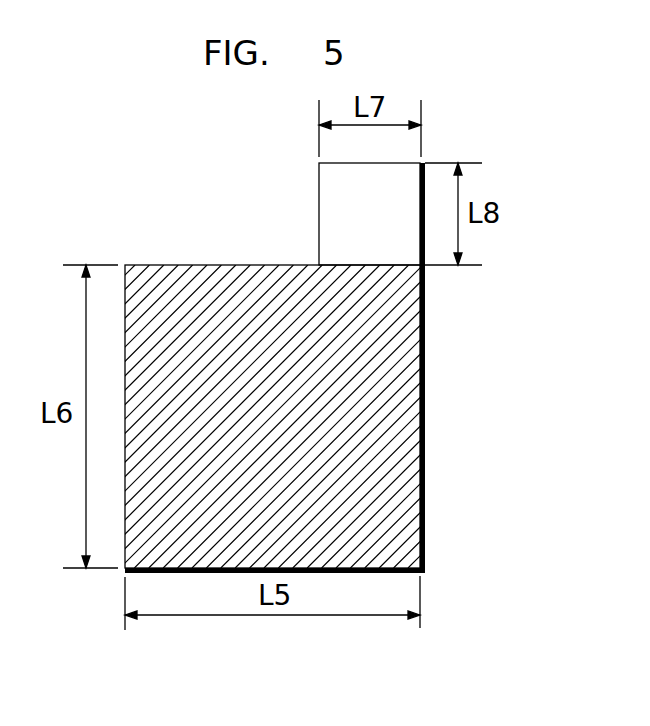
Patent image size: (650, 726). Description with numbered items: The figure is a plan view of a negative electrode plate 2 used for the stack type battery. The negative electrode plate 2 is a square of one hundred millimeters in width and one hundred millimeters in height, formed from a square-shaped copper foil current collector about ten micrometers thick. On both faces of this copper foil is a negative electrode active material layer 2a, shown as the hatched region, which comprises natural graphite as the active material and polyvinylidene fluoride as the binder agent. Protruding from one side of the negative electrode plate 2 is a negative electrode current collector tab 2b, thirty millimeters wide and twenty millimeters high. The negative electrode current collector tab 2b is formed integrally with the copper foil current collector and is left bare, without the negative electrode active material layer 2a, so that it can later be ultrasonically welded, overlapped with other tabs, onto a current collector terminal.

The negative electrode plate 2 is at (531, 228).
The negative electrode active material layer 2a is at (402, 413).
The negative electrode current collector tab 2b is at (353, 208).